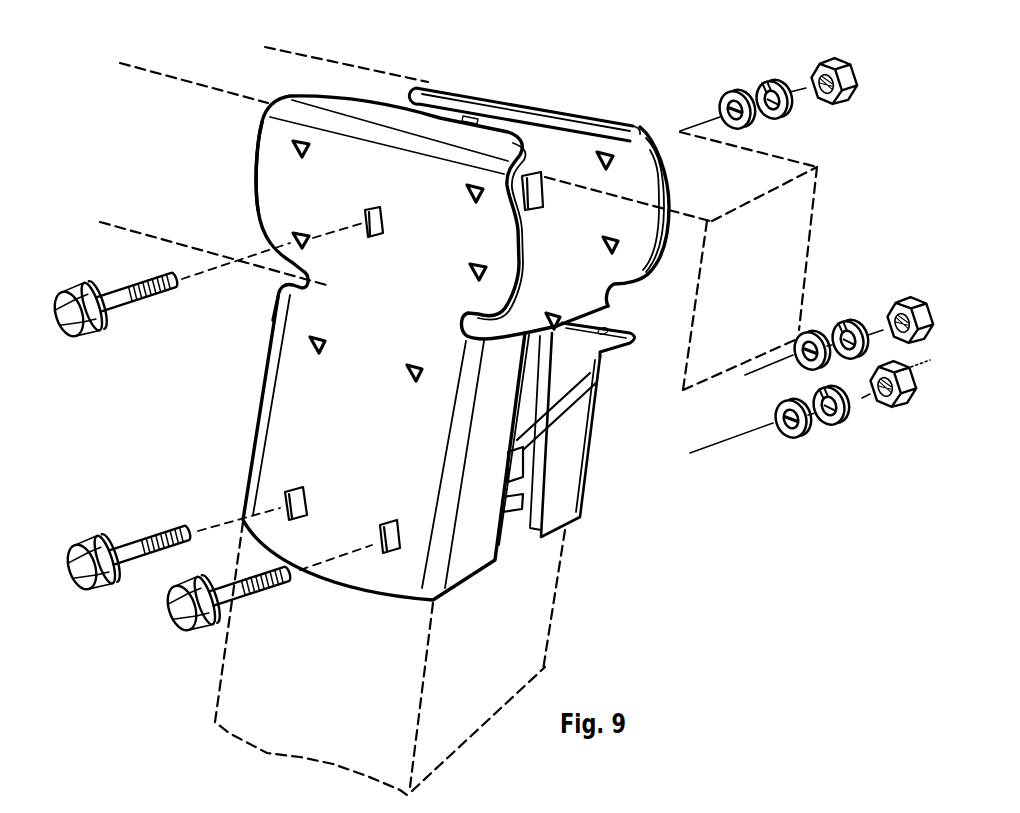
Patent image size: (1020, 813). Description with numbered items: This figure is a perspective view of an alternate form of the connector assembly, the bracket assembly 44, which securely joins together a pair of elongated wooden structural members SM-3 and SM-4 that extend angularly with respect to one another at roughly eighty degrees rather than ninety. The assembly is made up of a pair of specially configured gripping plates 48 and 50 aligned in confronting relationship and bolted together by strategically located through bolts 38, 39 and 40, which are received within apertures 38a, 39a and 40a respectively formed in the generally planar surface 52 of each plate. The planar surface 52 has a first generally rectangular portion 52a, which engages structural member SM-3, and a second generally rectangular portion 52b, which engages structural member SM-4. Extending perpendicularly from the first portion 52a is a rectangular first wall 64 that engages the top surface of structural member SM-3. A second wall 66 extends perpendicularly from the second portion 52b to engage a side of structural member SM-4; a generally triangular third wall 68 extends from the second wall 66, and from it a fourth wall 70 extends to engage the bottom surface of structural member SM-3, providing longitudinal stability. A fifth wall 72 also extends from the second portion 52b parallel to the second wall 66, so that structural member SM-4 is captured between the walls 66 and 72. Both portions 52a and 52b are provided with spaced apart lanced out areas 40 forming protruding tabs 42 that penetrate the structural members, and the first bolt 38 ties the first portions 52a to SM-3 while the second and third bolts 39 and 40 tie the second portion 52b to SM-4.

The first bolt 38 is at (126, 253).
The aperture 38a is at (377, 235).
The second bolt 39 is at (141, 508).
The aperture 39a is at (290, 490).
The third bolt 40 is at (233, 607).
The aperture 40a is at (378, 529).
The protruding tabs 42 is at (310, 150).
The bracket assembly 44 is at (471, 325).
The gripping plate 48 is at (437, 84).
The gripping plate 50 is at (257, 155).
The planar surface 52 is at (471, 327).
The first portion 52a is at (428, 197).
The second portion 52b is at (390, 447).
The first wall 64 is at (350, 108).
The second wall 66 is at (470, 527).
The third wall 68 is at (566, 372).
The fourth wall 70 is at (622, 328).
The fifth wall 72 is at (567, 473).
The structural member SM-3 is at (738, 172).
The structural member SM-4 is at (520, 632).